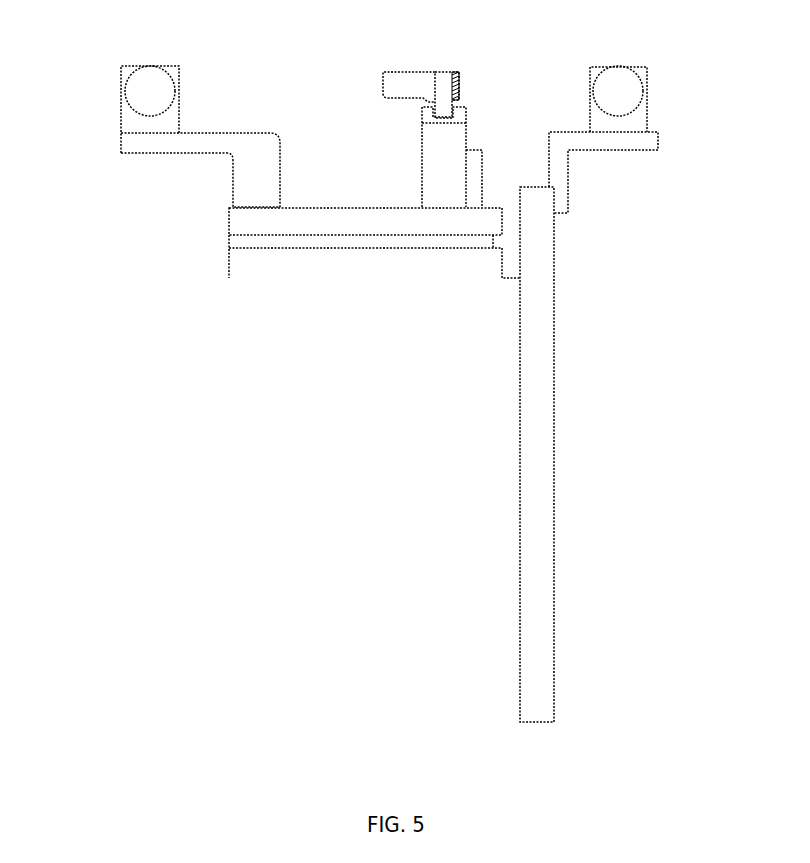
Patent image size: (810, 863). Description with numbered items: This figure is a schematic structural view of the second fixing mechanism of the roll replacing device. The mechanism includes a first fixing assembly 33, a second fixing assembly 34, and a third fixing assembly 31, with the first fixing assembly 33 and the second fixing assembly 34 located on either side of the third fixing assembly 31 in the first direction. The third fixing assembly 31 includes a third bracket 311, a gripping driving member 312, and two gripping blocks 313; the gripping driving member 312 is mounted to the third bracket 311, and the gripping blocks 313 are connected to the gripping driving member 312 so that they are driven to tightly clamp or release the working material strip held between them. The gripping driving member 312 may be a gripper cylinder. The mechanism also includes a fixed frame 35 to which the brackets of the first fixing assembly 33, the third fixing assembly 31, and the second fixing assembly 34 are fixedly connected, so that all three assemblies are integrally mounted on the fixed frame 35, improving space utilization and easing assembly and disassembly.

The third fixing assembly 31 is at (463, 86).
The third bracket 311 is at (472, 172).
The gripping driving member 312 is at (432, 157).
The gripping block 313 is at (408, 78).
The first fixing assembly 33 is at (127, 90).
The second fixing assembly 34 is at (647, 102).
The fixed frame 35 is at (540, 446).